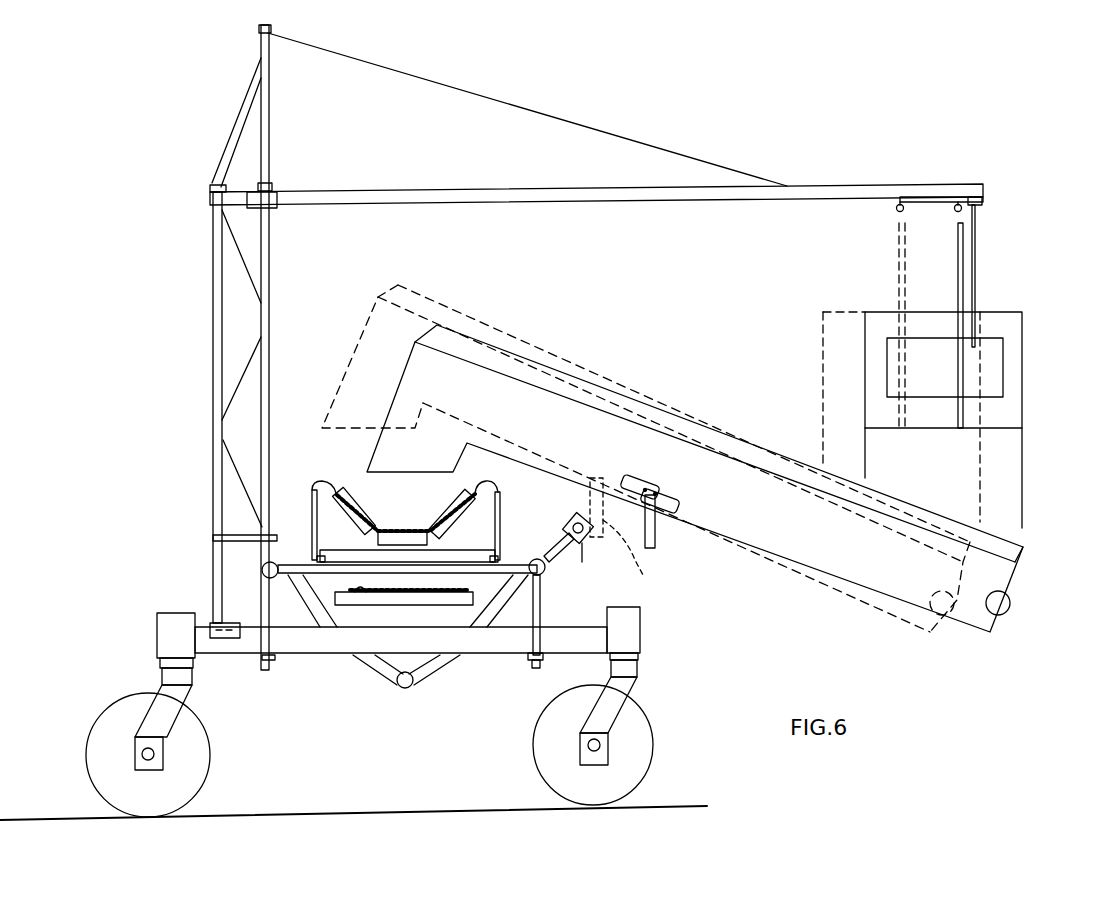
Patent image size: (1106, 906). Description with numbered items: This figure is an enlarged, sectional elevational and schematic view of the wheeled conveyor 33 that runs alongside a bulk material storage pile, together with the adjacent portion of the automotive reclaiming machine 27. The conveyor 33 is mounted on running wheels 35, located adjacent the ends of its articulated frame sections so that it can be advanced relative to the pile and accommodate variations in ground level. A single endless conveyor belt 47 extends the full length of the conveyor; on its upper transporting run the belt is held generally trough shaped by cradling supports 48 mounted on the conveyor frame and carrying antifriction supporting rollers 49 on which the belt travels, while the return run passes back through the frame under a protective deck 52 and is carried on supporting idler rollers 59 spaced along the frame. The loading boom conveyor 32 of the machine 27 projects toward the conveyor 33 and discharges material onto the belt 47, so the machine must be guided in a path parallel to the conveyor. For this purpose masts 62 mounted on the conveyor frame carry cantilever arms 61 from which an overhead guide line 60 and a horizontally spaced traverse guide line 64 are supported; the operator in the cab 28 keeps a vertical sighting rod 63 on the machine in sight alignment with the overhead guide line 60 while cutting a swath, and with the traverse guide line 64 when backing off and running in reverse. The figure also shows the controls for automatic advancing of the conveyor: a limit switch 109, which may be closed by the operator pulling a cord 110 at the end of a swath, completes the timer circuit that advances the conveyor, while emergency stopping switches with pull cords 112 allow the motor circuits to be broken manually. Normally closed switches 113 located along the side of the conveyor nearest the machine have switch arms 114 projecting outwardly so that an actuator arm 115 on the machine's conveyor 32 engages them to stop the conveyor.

The automotive machine 27 is at (1040, 398).
The cab 28 is at (1018, 354).
The loading boom conveyor 32 is at (575, 370).
The conveyor 33 is at (153, 559).
The wheels 35 is at (212, 745).
The endless conveyor belt 47 is at (355, 512).
The cradling supports 48 is at (493, 489).
The antifriction supporting rollers 49 is at (316, 508).
The protective deck 52 is at (461, 552).
The supporting idler rollers 59 is at (452, 600).
The overhead guide line 60 is at (957, 206).
The cantilever arms 61 is at (700, 200).
The masts 62 is at (213, 345).
The vertical sighting rod 63 is at (958, 288).
The traverse guide line 64 is at (897, 208).
The limit switch 109 is at (978, 206).
The cord 110 is at (978, 288).
The pull cords 112 is at (584, 546).
The normally closed switches 113 is at (565, 526).
The switch arms 114 is at (585, 522).
The actuator arm 115 is at (642, 532).